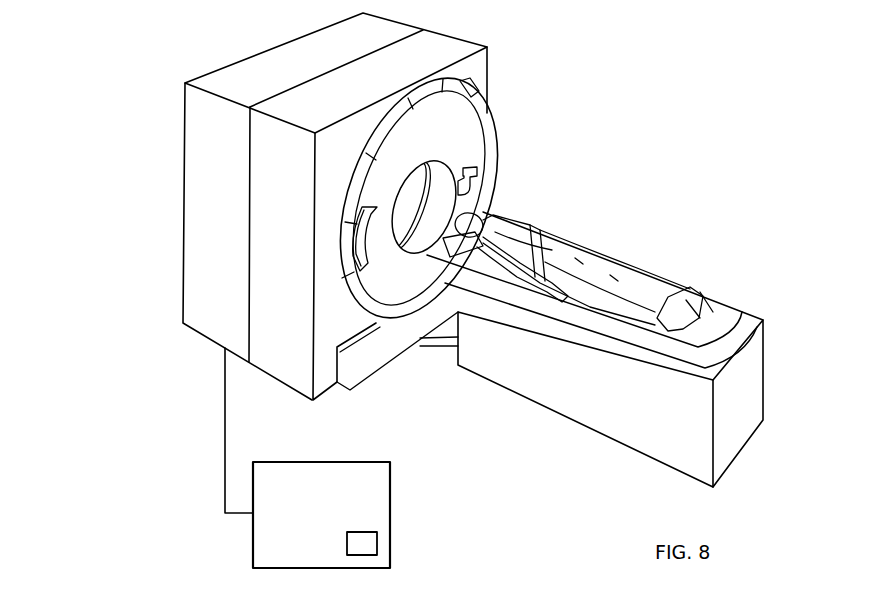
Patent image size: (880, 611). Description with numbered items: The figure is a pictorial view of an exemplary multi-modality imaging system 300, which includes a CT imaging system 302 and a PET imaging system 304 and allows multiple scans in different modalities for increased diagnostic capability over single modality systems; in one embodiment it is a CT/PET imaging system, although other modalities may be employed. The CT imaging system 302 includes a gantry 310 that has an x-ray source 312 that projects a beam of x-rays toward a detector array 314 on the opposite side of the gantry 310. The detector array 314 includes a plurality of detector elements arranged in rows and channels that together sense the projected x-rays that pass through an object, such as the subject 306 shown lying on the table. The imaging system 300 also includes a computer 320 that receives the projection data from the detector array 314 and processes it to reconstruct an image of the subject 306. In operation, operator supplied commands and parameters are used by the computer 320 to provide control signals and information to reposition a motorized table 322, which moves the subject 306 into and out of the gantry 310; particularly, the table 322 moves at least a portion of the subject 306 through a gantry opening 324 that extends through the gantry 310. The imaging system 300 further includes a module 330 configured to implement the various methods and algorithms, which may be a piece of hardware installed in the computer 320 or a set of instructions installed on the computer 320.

The multi-modality imaging system 300 is at (145, 40).
The CT imaging system 302 is at (285, 367).
The PET imaging system 304 is at (210, 323).
The subject 306 is at (545, 242).
The gantry 310 is at (477, 68).
The x-ray source 312 is at (480, 178).
The detector array 314 is at (370, 256).
The computer 320 is at (392, 490).
The motorized table 322 is at (602, 418).
The gantry opening 324 is at (432, 180).
The module 330 is at (368, 541).